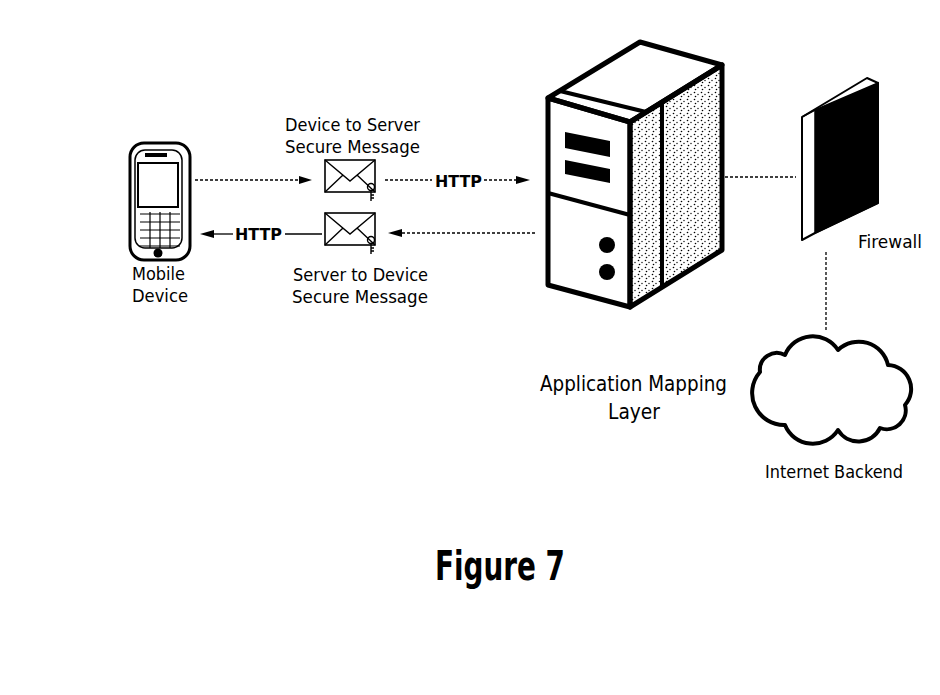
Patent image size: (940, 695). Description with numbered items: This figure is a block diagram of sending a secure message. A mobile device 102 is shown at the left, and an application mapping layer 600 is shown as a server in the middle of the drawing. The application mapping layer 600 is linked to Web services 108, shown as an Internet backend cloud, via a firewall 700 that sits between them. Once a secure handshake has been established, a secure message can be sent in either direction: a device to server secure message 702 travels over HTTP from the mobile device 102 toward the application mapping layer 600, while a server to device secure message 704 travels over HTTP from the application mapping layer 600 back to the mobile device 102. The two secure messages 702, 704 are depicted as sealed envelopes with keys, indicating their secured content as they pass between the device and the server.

The mobile device 102 is at (132, 167).
The device to server secure message 702 is at (325, 185).
The server to device secure message 704 is at (372, 216).
The application mapping layer server 600 is at (722, 66).
The firewall 700 is at (878, 98).
The Web services 108 is at (900, 371).